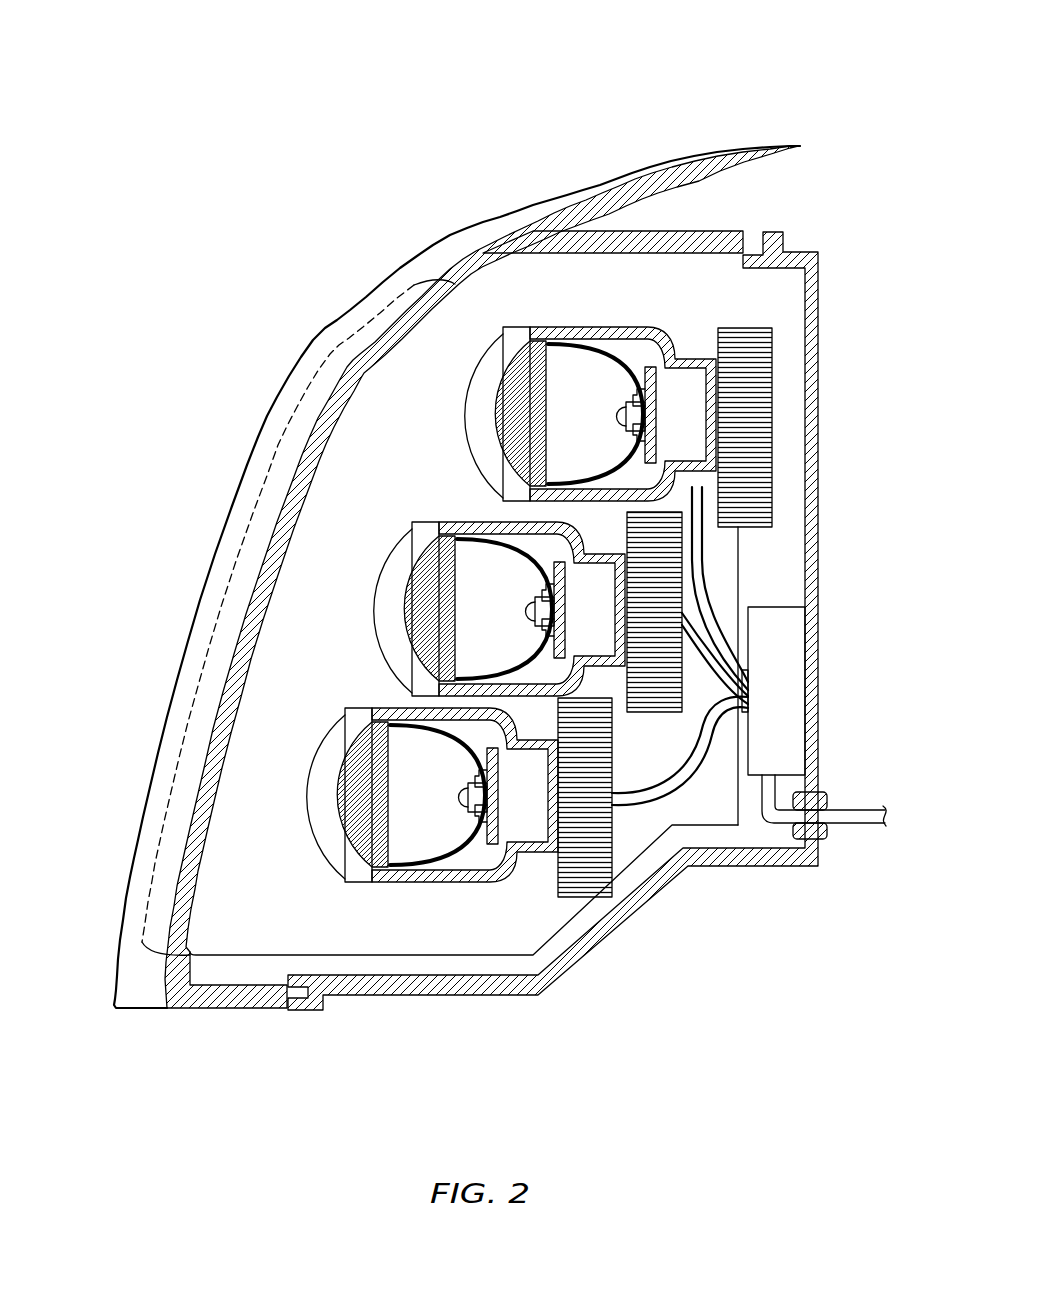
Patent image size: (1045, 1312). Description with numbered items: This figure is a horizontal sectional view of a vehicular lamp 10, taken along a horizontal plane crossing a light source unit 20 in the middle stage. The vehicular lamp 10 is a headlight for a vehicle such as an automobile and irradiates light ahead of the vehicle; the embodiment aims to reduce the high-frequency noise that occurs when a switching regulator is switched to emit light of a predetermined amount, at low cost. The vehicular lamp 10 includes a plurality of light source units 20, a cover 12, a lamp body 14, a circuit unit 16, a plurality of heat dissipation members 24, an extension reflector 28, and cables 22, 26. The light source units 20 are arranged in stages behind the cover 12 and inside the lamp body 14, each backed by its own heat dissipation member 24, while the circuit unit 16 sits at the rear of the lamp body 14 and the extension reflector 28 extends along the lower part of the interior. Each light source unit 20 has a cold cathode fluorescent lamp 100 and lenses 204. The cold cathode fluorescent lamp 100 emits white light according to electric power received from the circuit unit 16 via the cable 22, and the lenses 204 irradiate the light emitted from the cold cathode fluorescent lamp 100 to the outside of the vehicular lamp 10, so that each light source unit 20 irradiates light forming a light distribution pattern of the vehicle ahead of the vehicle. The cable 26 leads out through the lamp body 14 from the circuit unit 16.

The vehicular lamp 10 is at (858, 48).
The cover 12 is at (325, 345).
The lamp body 14 is at (818, 306).
The circuit unit 16 is at (782, 722).
The light source unit 20 is at (377, 507).
The cable 22 is at (697, 650).
The heat dissipation member 24 is at (773, 403).
The cable 26 is at (857, 818).
The extension reflector 28 is at (412, 932).
The cold cathode fluorescent lamp 100 is at (397, 704).
The lens 204 is at (213, 800).